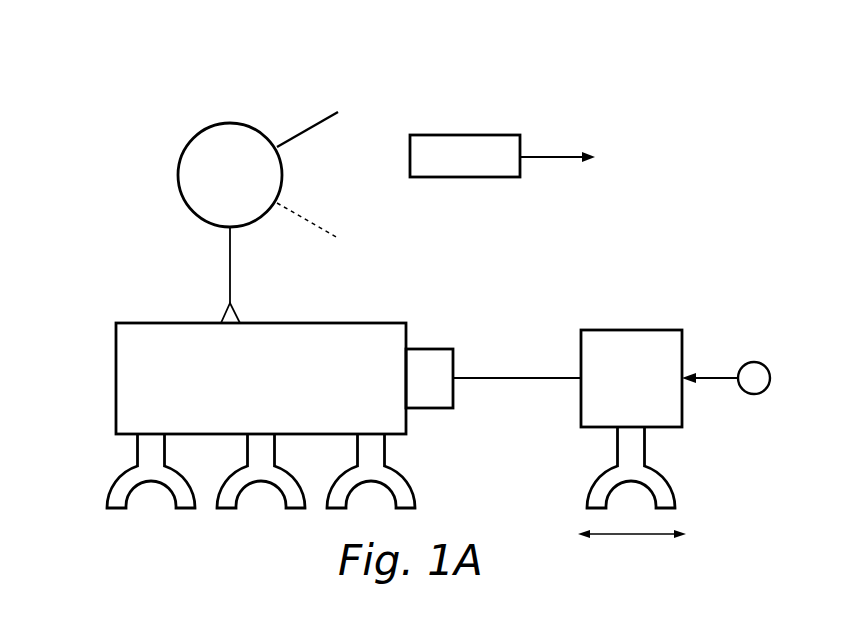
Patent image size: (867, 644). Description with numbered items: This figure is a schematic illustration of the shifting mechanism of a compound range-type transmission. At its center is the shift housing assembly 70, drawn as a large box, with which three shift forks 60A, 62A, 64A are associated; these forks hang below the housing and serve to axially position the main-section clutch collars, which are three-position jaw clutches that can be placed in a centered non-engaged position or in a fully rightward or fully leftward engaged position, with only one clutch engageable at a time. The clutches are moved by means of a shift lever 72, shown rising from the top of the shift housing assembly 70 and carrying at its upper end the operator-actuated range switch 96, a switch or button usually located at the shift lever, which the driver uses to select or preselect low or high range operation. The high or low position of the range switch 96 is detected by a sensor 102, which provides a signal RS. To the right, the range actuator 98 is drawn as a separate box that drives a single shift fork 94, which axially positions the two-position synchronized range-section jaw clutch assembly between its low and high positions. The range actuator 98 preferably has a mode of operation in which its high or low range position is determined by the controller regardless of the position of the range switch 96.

The shift housing assembly 70 is at (115, 380).
The shift lever 72 is at (229, 263).
The range switch 96 is at (303, 132).
The sensor 102 is at (468, 135).
The range actuator 98 is at (645, 329).
The shift fork 94 is at (647, 443).
The shift fork 60A is at (136, 450).
The shift fork 62A is at (247, 449).
The shift fork 64A is at (385, 448).